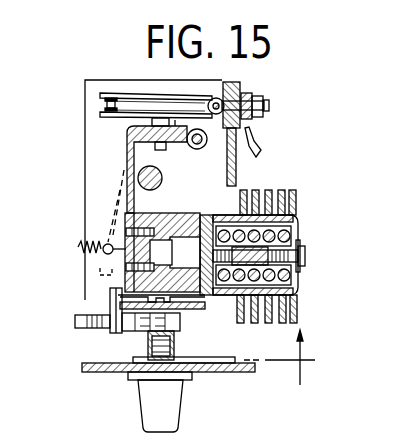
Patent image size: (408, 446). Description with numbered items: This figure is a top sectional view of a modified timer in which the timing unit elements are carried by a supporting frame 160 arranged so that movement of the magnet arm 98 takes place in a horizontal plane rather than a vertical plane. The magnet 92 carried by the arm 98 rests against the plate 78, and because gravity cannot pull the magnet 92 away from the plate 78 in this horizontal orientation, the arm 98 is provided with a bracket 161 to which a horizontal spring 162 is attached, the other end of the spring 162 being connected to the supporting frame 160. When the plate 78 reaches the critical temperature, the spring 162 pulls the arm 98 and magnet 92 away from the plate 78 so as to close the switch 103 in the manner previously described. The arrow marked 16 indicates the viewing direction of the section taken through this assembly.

The supporting frame 160 is at (143, 85).
The switch 103 is at (98, 104).
The magnet arm 98 is at (110, 165).
The horizontal spring 162 is at (88, 242).
The bracket 161 is at (104, 256).
The magnet 92 is at (180, 209).
The plate 78 is at (215, 215).
The section line for FIG. 16 is at (300, 357).